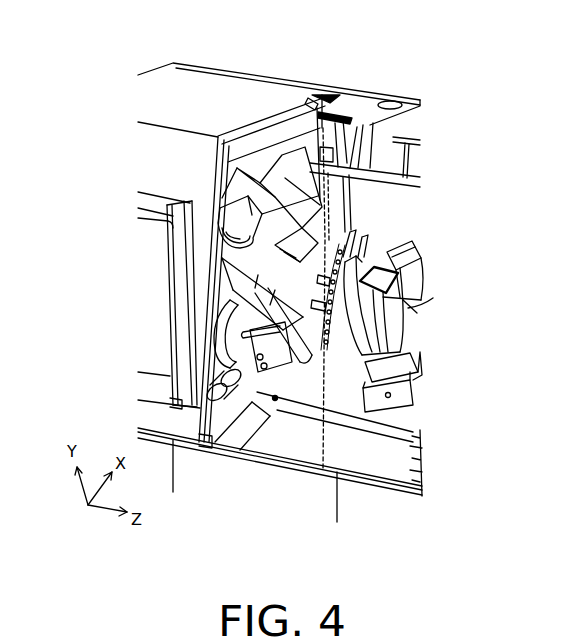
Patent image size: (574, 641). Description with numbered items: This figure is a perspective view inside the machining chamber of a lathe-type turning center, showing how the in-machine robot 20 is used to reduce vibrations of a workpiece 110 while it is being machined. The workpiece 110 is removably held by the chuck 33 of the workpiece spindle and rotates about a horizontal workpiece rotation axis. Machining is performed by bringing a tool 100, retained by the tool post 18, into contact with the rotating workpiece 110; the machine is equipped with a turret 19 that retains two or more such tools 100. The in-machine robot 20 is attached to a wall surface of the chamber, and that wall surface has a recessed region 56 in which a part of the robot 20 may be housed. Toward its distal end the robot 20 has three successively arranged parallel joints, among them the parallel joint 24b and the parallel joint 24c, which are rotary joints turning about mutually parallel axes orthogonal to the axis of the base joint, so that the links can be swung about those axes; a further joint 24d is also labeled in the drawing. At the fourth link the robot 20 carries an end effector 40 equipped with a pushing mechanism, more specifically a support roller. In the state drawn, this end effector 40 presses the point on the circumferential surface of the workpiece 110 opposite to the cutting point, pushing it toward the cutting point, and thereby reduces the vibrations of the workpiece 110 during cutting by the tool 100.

The in-machine robot 20 is at (228, 137).
The parallel joint 24b is at (264, 185).
The recessed region 56 is at (304, 100).
The turret 19 is at (347, 238).
The tool post 18 is at (392, 248).
The parallel joint 24c is at (247, 283).
The curved plate 24d is at (200, 330).
The chuck 33 is at (170, 357).
The tool 100 is at (390, 368).
The end effector 40 is at (275, 400).
The workpiece 110 is at (323, 470).